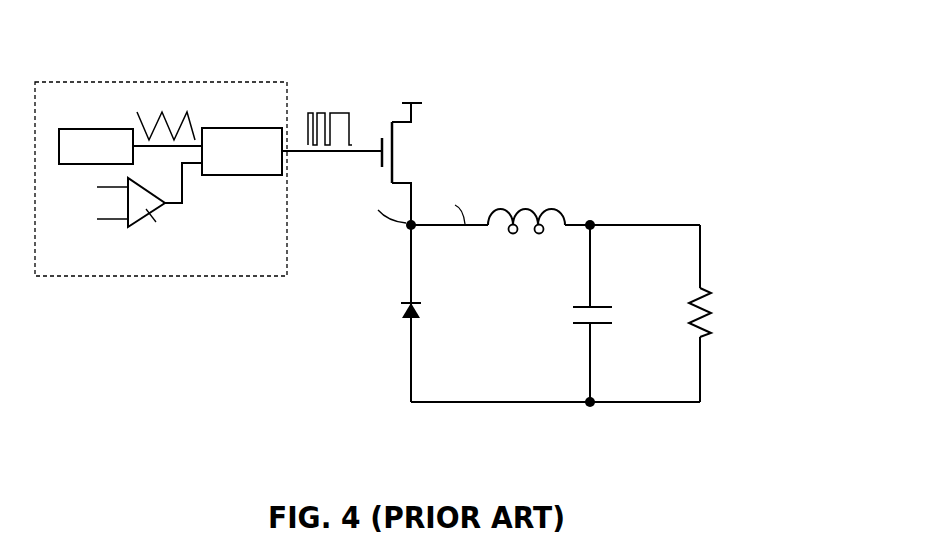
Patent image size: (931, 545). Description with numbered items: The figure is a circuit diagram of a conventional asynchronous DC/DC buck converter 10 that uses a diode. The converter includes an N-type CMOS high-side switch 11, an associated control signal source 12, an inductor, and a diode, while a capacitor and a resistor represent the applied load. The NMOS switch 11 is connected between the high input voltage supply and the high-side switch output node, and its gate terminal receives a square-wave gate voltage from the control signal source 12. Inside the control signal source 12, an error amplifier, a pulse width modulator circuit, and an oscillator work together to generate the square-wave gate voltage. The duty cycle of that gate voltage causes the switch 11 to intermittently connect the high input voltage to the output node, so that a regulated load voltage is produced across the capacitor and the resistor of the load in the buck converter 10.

The asynchronous DC/DC buck converter 10 is at (583, 76).
The NMOS high-side switch 11 is at (413, 140).
The control signal source 12 is at (180, 90).